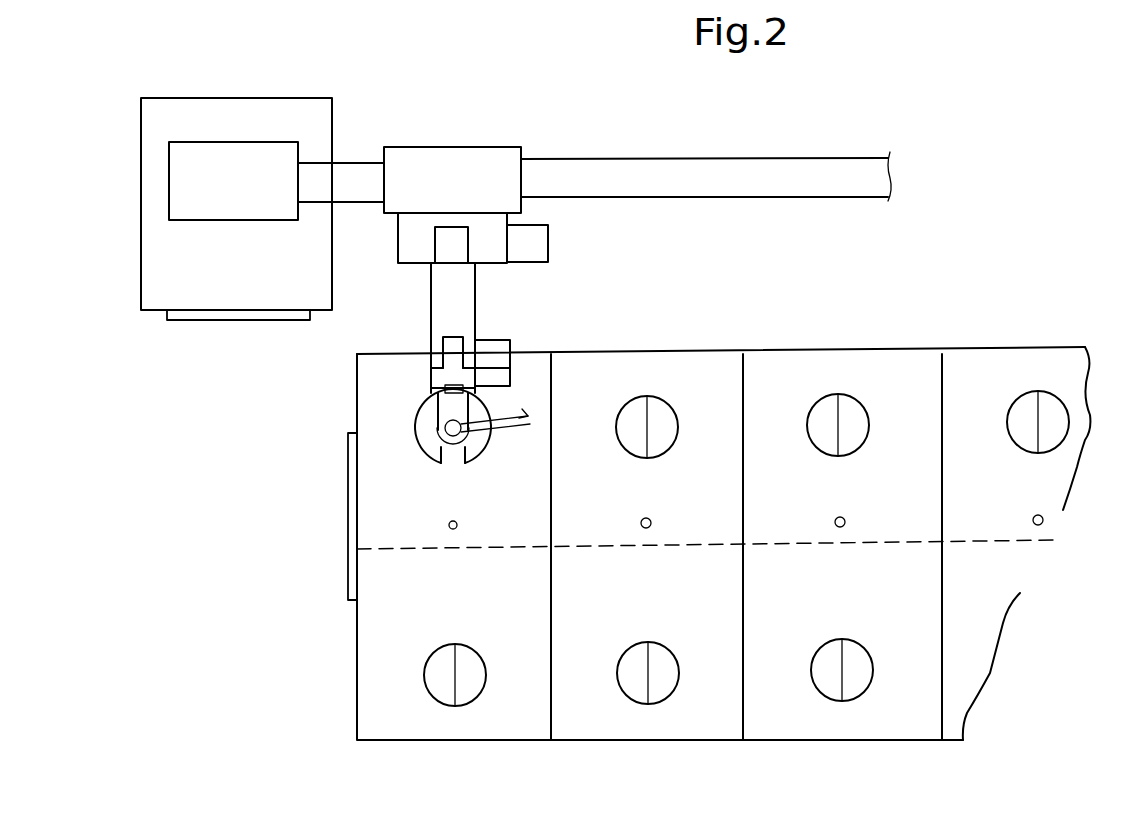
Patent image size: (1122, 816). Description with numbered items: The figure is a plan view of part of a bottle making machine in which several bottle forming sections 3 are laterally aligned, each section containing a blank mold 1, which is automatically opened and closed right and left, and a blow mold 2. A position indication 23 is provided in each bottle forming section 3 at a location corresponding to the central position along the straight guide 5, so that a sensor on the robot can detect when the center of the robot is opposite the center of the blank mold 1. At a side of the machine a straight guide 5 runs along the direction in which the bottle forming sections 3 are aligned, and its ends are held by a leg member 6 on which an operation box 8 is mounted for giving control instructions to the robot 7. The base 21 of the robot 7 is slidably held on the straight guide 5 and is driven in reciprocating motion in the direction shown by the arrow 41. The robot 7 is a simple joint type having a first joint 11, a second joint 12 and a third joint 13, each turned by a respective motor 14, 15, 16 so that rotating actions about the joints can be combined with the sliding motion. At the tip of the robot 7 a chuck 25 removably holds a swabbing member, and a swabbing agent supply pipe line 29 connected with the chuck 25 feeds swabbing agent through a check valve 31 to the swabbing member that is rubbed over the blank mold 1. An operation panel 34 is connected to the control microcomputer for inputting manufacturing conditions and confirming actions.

The blank mold 1 is at (487, 450).
The blow mold 2 is at (478, 650).
The bottle forming section 3 is at (497, 722).
The straight guide 5 is at (692, 178).
The leg member 6 is at (140, 253).
The robot 7 is at (494, 275).
The operation box 8 is at (212, 321).
The first joint 11 is at (432, 243).
The second joint 12 is at (440, 353).
The third joint 13 is at (440, 388).
The motor 14 is at (540, 240).
The motor 15 is at (497, 350).
The motor 16 is at (497, 380).
The base 21 is at (493, 175).
The position indication 23 is at (457, 525).
The chuck 25 is at (443, 408).
The swabbing agent supply pipe line 29 is at (525, 428).
The check valve 31 is at (480, 473).
The operation panel 34 is at (347, 502).
The arrow 41 is at (617, 275).